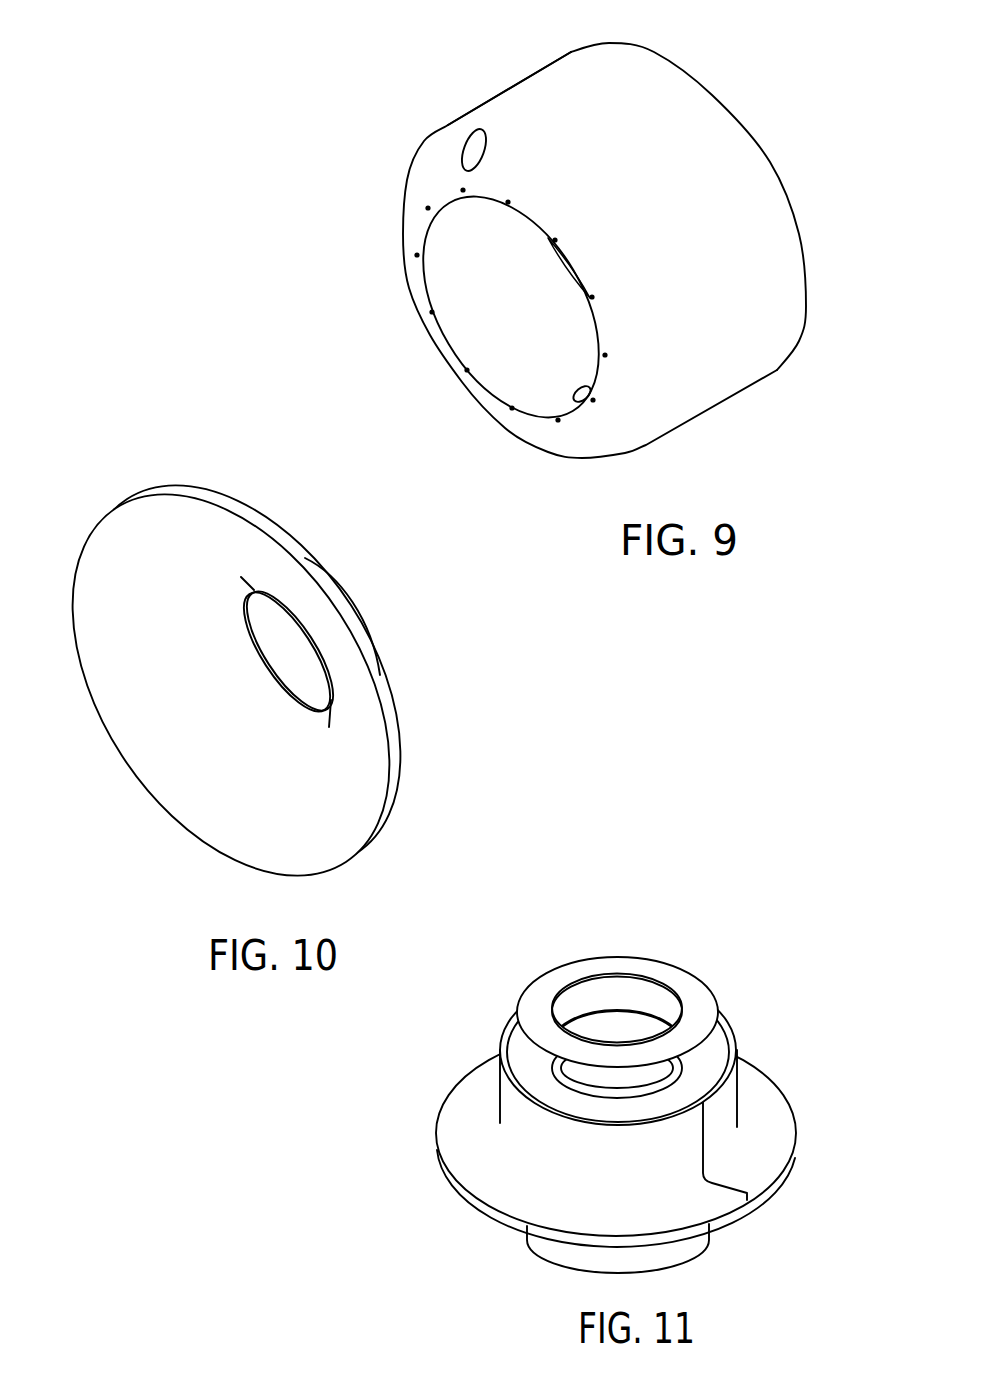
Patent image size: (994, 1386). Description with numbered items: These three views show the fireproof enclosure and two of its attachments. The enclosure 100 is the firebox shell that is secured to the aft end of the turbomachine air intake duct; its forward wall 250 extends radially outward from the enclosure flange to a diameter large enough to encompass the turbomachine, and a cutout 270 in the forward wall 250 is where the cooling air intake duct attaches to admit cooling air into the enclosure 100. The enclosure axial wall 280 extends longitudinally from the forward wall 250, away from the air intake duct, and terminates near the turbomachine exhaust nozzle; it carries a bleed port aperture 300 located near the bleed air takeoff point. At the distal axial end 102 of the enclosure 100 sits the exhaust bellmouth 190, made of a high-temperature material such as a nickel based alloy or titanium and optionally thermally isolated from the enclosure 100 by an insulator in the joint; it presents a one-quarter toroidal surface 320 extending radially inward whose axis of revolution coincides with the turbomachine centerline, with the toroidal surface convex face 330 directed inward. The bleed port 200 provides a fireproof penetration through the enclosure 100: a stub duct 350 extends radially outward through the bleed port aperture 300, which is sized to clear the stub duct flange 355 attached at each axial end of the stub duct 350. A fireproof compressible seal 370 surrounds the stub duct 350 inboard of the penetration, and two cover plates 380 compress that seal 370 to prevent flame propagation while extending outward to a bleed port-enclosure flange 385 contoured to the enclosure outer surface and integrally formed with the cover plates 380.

In FIG. 9, the enclosure 100 is at (625, 249).
In FIG. 9, the distal axial end 102 is at (772, 164).
In FIG. 10, the exhaust bellmouth 190 is at (236, 680).
In FIG. 11, the bleed port 200 is at (652, 1104).
In FIG. 9, the forward wall 250 is at (402, 228).
In FIG. 9, the cutout 270 is at (463, 153).
In FIG. 9, the enclosure axial wall 280 is at (528, 78).
In FIG. 9, the bleed port aperture 300 is at (581, 388).
In FIG. 10, the one-quarter toroidal surface 320 is at (307, 735).
In FIG. 10, the toroidal surface convex face 330 is at (150, 783).
In FIG. 11, the stub duct 350 is at (577, 1090).
In FIG. 11, the stub duct flange 355 is at (687, 977).
In FIG. 11, the fireproof compressible seal 370 is at (623, 1112).
In FIG. 11, the cover plates 380 is at (780, 1133).
In FIG. 11, the bleed port-enclosure flange 385 is at (782, 1177).